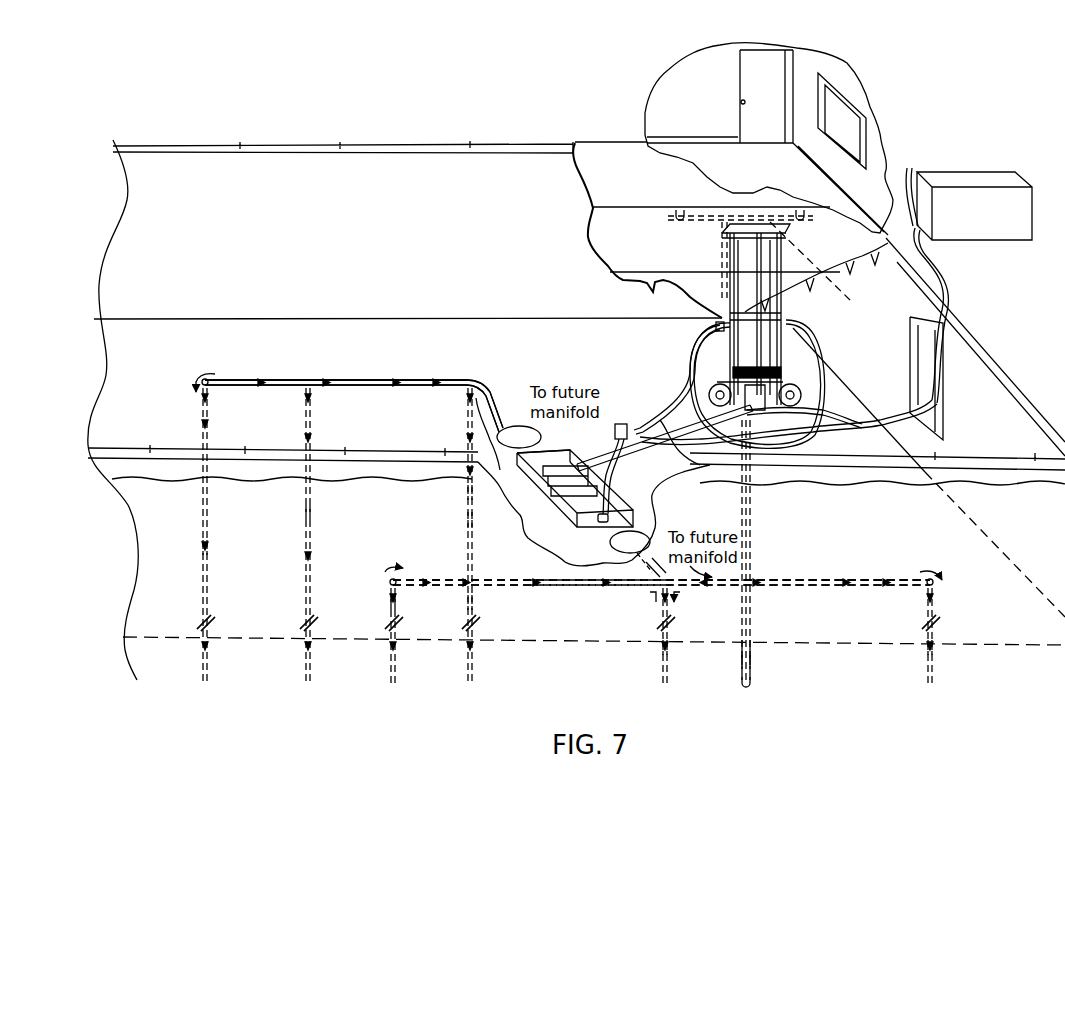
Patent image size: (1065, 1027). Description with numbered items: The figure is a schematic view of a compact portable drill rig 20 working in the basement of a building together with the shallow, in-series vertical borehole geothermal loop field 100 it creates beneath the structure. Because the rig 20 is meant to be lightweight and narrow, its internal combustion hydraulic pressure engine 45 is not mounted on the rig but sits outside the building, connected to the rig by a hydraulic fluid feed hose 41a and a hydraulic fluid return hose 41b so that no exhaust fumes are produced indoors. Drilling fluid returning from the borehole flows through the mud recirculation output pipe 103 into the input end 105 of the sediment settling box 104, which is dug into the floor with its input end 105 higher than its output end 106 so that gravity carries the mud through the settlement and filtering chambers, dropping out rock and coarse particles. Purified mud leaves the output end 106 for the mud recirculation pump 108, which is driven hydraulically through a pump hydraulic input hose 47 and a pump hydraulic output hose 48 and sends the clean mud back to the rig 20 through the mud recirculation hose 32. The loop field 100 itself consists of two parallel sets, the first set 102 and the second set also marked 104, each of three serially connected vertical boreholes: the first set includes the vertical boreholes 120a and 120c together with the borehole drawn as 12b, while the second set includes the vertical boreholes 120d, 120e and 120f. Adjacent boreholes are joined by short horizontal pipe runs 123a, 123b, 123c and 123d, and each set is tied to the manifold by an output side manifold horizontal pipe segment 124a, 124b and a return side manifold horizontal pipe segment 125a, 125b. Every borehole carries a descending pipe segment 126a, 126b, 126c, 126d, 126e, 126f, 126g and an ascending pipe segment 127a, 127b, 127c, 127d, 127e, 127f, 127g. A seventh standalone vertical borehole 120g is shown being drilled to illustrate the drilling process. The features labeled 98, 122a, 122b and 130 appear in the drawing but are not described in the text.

The drop line 12b is at (665, 684).
The drill rig 20 is at (795, 317).
The mud recirculation hose 32 is at (820, 340).
The hydraulic fluid feed hose 41a is at (948, 268).
The hydraulic fluid return hose 41b is at (905, 186).
The hydraulic pressure engine 45 is at (985, 172).
The pump hydraulic input hose 47 is at (700, 367).
The pump hydraulic output hose 48 is at (698, 342).
The ceiling support edge 98 is at (852, 272).
The geothermal loop field 100 is at (470, 366).
The first set of serially connected vertical boreholes 102 is at (962, 620).
The mud recirculation output pipe 103 is at (826, 410).
The sediment settling box 104 is at (347, 366).
The input end 105 is at (541, 478).
The output end 106 is at (572, 513).
The mud recirculation pump 108 is at (621, 424).
The vertical borehole 120a is at (393, 684).
The vertical borehole 120c is at (930, 684).
The vertical borehole 120d is at (205, 684).
The vertical borehole 120e is at (308, 684).
The vertical borehole 120f is at (470, 684).
The standalone vertical borehole 120g is at (752, 498).
The supply pipe 122a is at (832, 580).
The supply pipe 122b is at (380, 378).
The short horizontal pipe run 123a is at (797, 587).
The short horizontal pipe run 123b is at (572, 588).
The short horizontal pipe run 123c is at (274, 386).
The short horizontal pipe run 123d is at (383, 388).
The output side manifold horizontal pipe segment 124a is at (665, 562).
The output side manifold horizontal pipe segment 124b is at (508, 424).
The return side manifold horizontal pipe segment 125a is at (640, 558).
The return side manifold horizontal pipe segment 125b is at (465, 406).
The descending pipe segment 126a is at (937, 652).
The descending pipe segment 126b is at (672, 650).
The descending pipe segment 126c is at (480, 654).
The descending pipe segment 126d is at (470, 520).
The descending pipe segment 126e is at (314, 568).
The descending pipe segment 126f is at (210, 600).
The descending pipe segment 126g is at (752, 660).
The ascending pipe segment 127a is at (922, 648).
The ascending pipe segment 127b is at (660, 648).
The ascending pipe segment 127c is at (465, 655).
The ascending pipe segment 127d is at (466, 492).
The ascending pipe segment 127e is at (305, 515).
The ascending pipe segment 127f is at (202, 545).
The ascending pipe segment 127g is at (746, 684).
The ceiling structure 130 is at (142, 356).